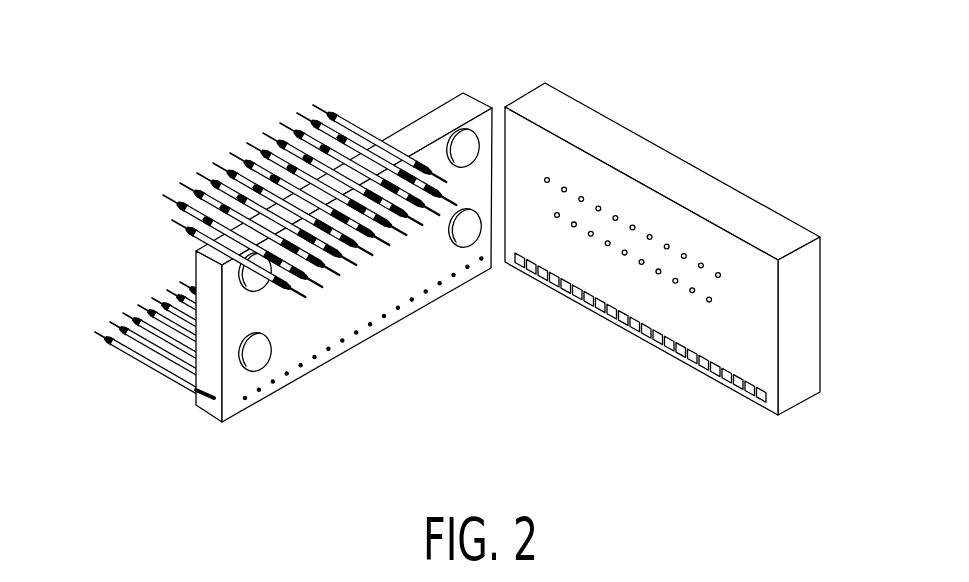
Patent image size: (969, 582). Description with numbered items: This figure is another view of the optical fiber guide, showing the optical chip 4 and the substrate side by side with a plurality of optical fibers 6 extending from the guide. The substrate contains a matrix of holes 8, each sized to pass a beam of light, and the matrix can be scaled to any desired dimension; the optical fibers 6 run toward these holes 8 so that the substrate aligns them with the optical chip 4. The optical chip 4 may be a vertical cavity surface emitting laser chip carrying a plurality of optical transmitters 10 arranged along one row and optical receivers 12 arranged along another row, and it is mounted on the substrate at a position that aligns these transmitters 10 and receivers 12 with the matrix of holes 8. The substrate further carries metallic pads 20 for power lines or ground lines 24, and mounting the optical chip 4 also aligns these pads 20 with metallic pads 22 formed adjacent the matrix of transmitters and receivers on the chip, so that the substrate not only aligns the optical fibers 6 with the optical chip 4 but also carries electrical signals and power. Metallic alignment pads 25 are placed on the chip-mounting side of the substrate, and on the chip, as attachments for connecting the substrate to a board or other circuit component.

The optical chip 4 is at (618, 120).
The optical fibers 6 is at (343, 105).
The holes 8 is at (200, 250).
The optical transmitters 10 is at (667, 245).
The optical receivers 12 is at (608, 242).
The metallic pads 20 is at (277, 385).
The metallic pads 22 is at (713, 367).
The ground lines 24 is at (143, 363).
The metallic alignment pads 25 is at (462, 140).